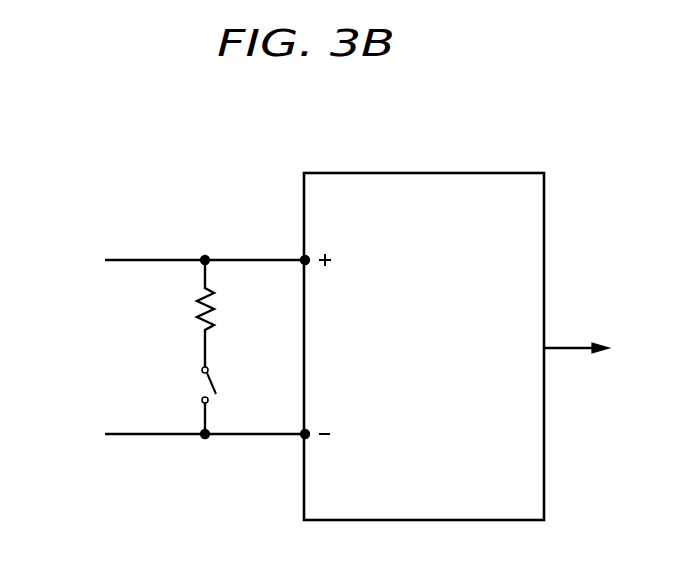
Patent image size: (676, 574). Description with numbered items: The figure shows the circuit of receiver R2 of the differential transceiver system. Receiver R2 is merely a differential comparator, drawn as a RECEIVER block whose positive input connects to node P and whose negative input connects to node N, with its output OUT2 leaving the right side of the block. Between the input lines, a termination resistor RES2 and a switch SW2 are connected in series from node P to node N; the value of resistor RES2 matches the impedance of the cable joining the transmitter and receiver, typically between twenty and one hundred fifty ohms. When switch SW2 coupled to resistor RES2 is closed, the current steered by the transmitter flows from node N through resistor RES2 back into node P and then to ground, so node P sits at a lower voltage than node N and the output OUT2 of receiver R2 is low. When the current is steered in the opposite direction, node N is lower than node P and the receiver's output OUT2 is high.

The receiver R2 is at (328, 105).
The receiver RECEIVER is at (424, 327).
The node P is at (206, 260).
The node N is at (206, 434).
The termination resistor RES2 is at (178, 313).
The switch SW2 is at (183, 400).
The output OUT2 is at (603, 347).